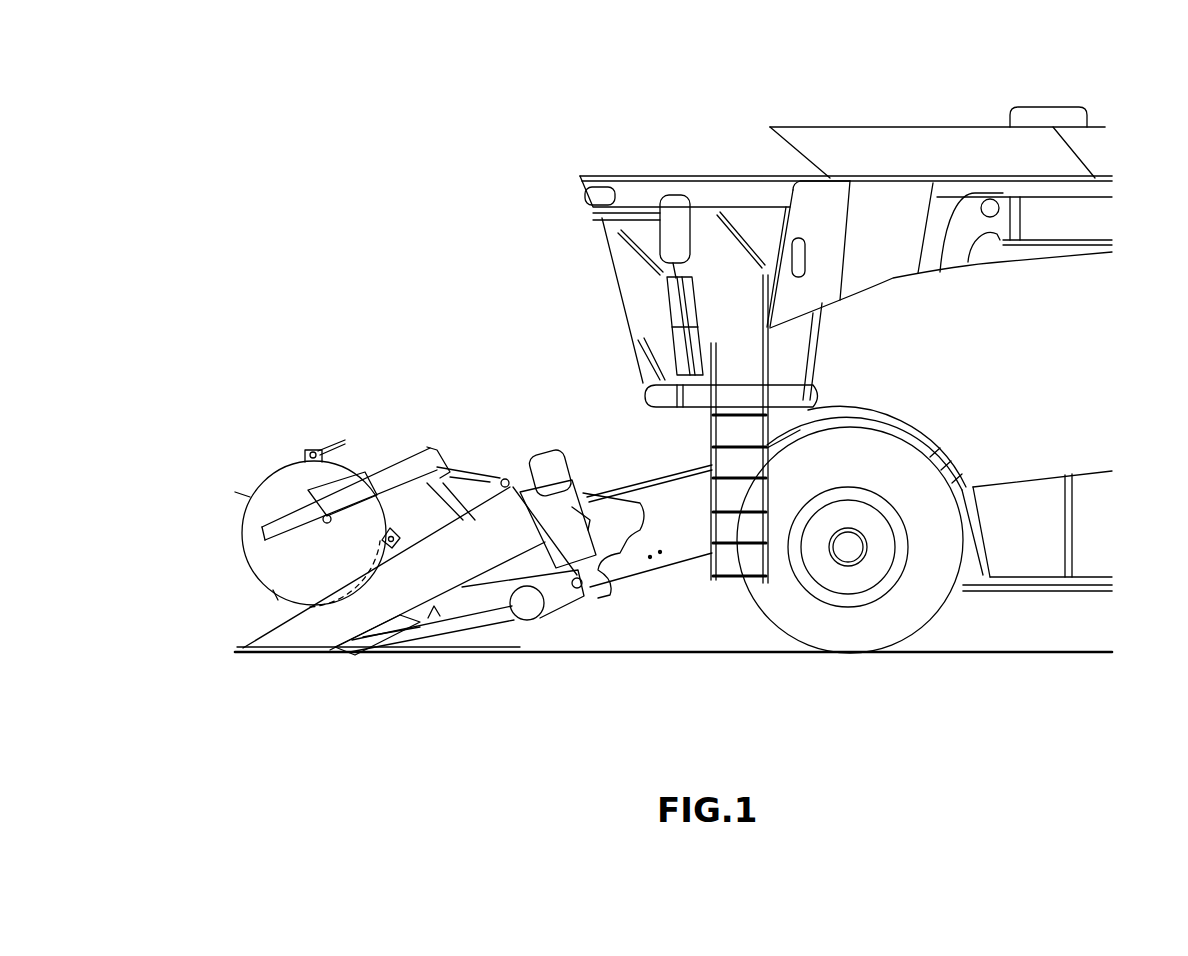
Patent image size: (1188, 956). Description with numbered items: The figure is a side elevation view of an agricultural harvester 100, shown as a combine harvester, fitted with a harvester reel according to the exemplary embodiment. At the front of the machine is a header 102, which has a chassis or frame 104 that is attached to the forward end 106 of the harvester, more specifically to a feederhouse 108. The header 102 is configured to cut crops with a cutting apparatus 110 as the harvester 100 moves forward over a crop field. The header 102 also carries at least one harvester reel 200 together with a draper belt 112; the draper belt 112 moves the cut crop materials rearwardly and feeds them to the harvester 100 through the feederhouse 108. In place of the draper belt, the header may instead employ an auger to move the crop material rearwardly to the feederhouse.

The agricultural harvester 100 is at (967, 107).
The header 102 is at (595, 710).
The chassis or frame 104 is at (575, 578).
The forward end 106 is at (548, 448).
The feederhouse 108 is at (600, 497).
The cutting apparatus 110 is at (343, 657).
The draper belt 112 is at (437, 614).
The harvester reel 200 is at (246, 470).